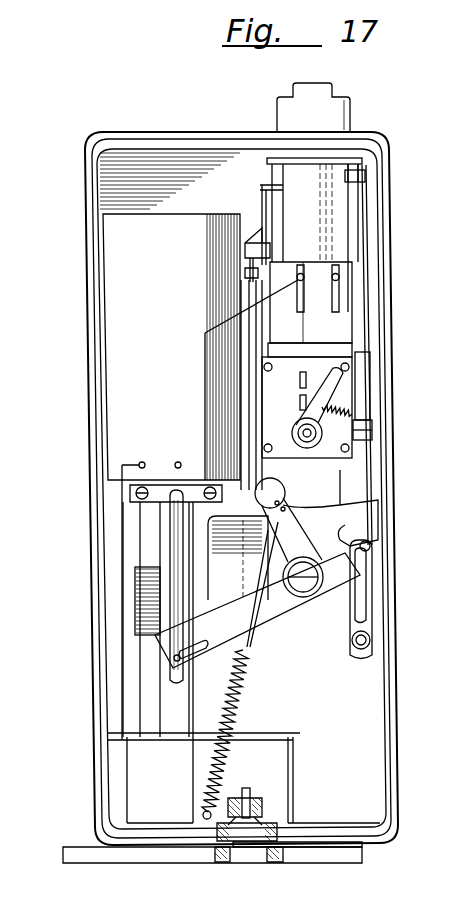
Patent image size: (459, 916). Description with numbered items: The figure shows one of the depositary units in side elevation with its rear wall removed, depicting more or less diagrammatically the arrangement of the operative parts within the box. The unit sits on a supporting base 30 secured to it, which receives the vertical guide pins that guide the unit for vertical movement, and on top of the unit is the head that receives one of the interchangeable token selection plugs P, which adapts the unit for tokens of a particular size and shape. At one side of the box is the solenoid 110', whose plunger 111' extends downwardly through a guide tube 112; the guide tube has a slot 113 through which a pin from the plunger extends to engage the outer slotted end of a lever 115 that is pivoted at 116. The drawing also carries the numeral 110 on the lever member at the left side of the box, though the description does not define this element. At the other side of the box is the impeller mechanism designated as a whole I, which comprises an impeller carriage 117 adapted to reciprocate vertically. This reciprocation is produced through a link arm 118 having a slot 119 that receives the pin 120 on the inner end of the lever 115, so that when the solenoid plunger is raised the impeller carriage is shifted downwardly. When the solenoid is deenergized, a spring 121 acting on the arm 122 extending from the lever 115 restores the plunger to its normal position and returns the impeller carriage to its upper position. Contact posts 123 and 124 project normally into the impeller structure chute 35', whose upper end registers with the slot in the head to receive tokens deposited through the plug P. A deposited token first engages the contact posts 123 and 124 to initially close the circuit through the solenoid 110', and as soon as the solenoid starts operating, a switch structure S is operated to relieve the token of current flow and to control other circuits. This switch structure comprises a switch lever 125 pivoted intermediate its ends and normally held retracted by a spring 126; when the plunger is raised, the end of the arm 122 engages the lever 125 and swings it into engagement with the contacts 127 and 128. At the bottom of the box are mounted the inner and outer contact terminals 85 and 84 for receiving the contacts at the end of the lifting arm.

The token selection plug P is at (350, 128).
The impeller mechanism I is at (347, 222).
The impeller carriage 117 is at (335, 193).
The contact post 123 is at (302, 250).
The contact post 124 is at (325, 242).
The impeller structure chute 35' is at (391, 287).
The solenoid 110' is at (142, 477).
The contact 127 is at (303, 400).
The contact 128 is at (303, 380).
The link arm 118 is at (367, 373).
The spring 126 is at (334, 406).
The switch structure S is at (332, 434).
The switch lever 125 is at (314, 455).
The plunger 111' is at (133, 611).
The slot 119 is at (370, 546).
The pin 120 is at (376, 552).
The arm 122 is at (285, 550).
The guide tube 112 is at (162, 580).
The slot 113 is at (165, 618).
The lever 110 is at (202, 611).
The pivot 116 is at (305, 592).
The lever 115 is at (270, 607).
The spring 121 is at (250, 663).
The inner contact terminal 85 is at (248, 794).
The outer contact terminal 84 is at (230, 857).
The supporting base 30 is at (155, 863).